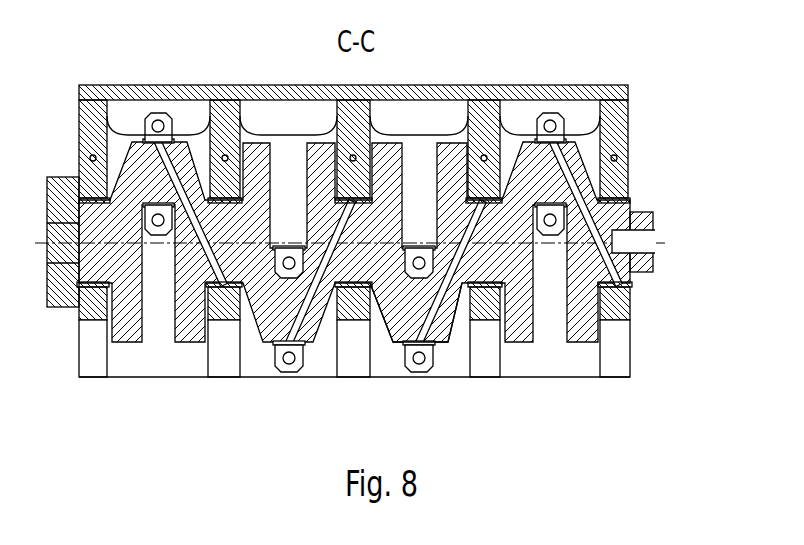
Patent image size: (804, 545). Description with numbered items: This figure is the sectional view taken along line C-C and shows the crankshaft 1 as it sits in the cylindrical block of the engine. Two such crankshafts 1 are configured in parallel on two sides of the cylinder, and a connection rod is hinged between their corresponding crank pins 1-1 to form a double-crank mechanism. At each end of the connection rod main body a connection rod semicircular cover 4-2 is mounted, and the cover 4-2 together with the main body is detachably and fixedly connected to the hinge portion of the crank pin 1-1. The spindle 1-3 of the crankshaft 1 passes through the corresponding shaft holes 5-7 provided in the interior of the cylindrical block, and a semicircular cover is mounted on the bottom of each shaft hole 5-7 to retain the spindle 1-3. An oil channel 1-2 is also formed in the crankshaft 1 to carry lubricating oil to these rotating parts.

The crankshaft 1 is at (598, 188).
The crank pin 1-1 is at (537, 133).
The oil channel 1-2 is at (603, 203).
The spindle 1-3 is at (477, 263).
The connection rod semicircular cover 4-2 is at (556, 118).
The shaft hole 5-7 is at (372, 285).